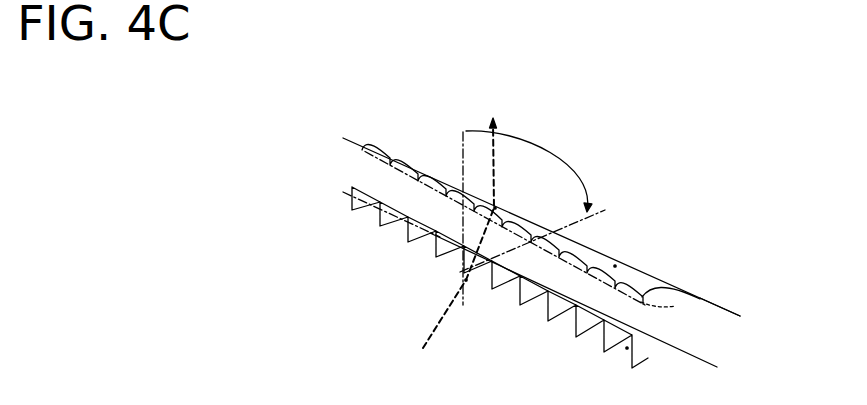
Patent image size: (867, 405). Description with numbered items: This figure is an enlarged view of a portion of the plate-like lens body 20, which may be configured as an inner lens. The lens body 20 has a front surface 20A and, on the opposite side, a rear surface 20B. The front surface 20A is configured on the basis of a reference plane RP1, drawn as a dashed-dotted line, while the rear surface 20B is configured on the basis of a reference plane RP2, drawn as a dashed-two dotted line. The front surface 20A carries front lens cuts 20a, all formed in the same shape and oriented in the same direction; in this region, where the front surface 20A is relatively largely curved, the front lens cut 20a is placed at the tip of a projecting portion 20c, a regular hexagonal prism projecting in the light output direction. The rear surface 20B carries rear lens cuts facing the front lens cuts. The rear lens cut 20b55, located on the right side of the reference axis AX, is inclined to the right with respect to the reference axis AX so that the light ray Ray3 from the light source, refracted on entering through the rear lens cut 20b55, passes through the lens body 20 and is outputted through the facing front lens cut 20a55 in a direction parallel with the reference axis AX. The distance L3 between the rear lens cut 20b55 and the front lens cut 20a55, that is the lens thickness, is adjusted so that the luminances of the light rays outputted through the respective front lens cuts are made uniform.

The lens body 20 is at (347, 169).
The front lens cut 20a is at (645, 284).
The front lens cut 20a55 is at (499, 209).
The front surface 20A is at (667, 227).
The rear surface 20B is at (554, 338).
The rear lens cut 20b55 is at (467, 282).
The projecting portion 20c is at (694, 300).
The distance L3 is at (728, 311).
The reference axis AX is at (463, 130).
The light ray Ray3 is at (499, 122).
The reference plane RP1 is at (615, 266).
The reference plane RP2 is at (627, 348).